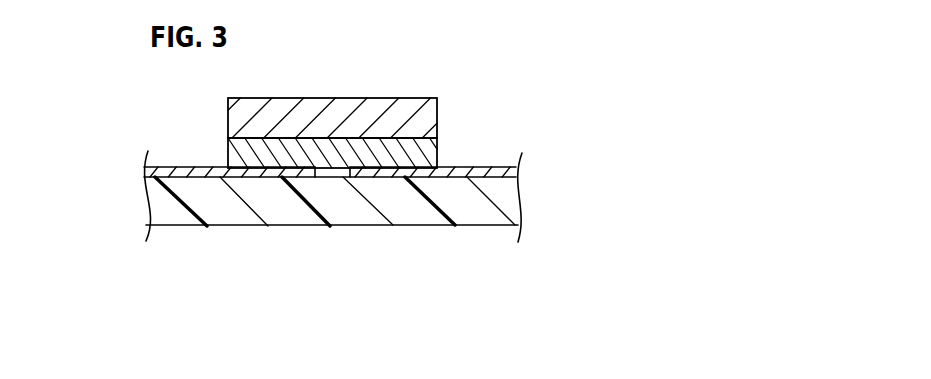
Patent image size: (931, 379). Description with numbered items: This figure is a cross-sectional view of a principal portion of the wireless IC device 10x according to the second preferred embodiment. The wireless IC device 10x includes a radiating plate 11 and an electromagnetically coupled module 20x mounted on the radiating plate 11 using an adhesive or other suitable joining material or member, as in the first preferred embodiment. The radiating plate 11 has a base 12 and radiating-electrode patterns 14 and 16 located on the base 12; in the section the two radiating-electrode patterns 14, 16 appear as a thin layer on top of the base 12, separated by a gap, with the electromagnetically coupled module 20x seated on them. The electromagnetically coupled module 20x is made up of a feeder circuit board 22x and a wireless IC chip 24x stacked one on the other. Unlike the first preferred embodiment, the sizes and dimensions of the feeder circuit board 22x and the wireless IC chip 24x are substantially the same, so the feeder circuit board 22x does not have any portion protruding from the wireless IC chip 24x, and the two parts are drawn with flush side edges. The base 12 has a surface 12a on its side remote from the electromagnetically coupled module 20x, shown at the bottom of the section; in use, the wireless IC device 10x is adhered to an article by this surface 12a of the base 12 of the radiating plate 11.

The wireless IC device 10x is at (711, 69).
The radiating plate 11 is at (121, 200).
The base 12 is at (507, 198).
The surface 12a is at (348, 227).
The radiating-electrode pattern 14 is at (253, 177).
The radiating-electrode pattern 16 is at (439, 182).
The electromagnetically coupled module 20x is at (597, 70).
The feeder circuit board 22x is at (437, 112).
The wireless IC chip 24x is at (437, 149).